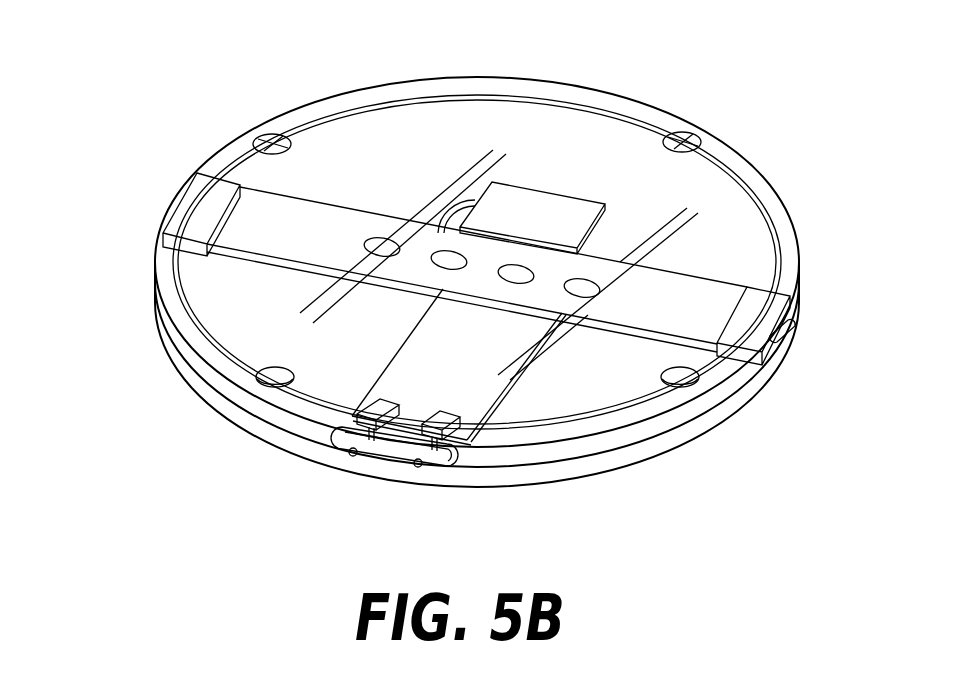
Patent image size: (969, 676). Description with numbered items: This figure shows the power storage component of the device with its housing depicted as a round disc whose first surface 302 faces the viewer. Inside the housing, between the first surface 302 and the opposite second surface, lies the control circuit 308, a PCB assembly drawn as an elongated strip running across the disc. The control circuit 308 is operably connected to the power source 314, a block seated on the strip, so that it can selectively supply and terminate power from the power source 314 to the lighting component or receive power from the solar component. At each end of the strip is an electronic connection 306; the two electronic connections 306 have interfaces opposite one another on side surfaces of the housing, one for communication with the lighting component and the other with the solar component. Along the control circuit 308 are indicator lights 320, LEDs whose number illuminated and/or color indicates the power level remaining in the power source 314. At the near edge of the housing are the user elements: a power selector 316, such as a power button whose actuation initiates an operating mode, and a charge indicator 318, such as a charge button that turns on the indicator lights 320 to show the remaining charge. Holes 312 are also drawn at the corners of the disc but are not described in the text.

The first surface 302 is at (727, 192).
The electronic connection 306 is at (185, 205).
The control circuit 308 is at (315, 226).
The screw hole 312 is at (675, 133).
The power source 314 is at (527, 205).
The power selector 316 is at (418, 472).
The charge indicator 318 is at (355, 460).
The indicator lights 320 is at (370, 240).